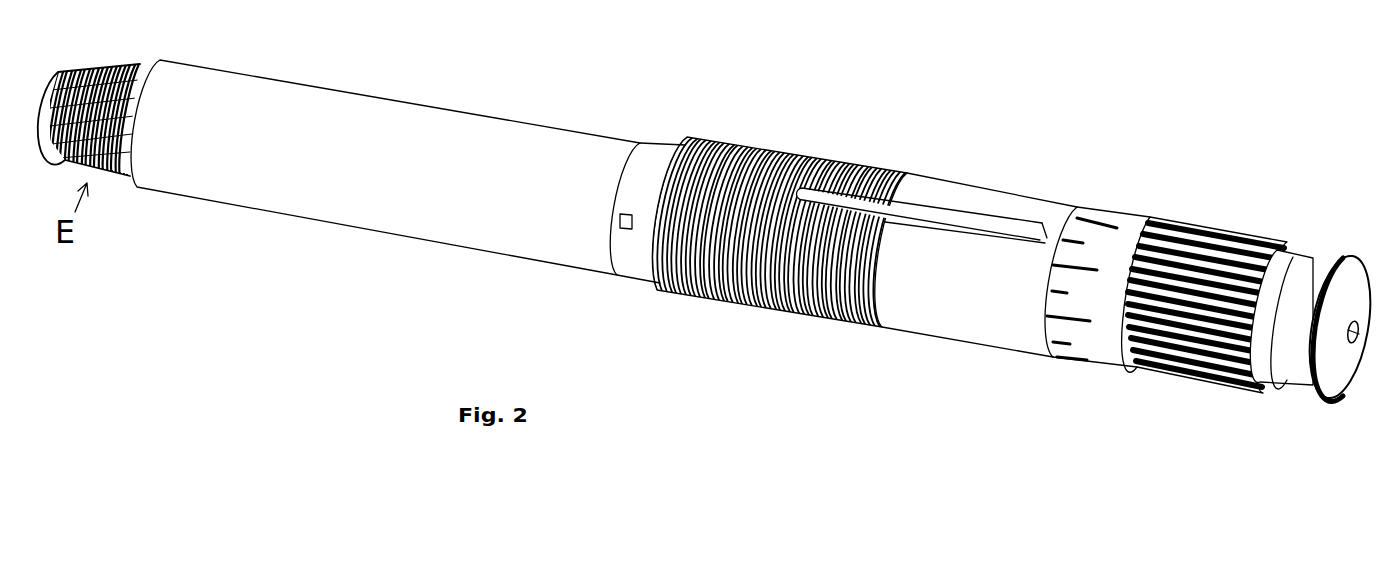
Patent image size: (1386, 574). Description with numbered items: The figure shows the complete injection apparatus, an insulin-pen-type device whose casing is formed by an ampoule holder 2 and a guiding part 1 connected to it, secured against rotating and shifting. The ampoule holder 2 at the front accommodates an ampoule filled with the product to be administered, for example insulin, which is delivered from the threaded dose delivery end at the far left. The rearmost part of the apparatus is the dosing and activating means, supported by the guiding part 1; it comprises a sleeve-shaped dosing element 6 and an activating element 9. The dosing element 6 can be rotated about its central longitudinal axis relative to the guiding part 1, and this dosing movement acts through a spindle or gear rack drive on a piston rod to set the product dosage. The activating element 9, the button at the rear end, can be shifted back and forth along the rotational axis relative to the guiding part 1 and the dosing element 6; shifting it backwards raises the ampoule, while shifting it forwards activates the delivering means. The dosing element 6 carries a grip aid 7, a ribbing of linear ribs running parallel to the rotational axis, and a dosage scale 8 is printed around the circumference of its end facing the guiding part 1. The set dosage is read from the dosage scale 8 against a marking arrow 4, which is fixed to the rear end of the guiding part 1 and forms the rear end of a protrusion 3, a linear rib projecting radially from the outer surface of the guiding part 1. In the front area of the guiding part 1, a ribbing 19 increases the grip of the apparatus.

The guiding part 1 is at (963, 320).
The ampoule holder 2 is at (433, 213).
The protrusion 3 is at (927, 210).
The marking arrow 4 is at (1040, 223).
The dosing element 6 is at (1177, 219).
The grip aid 7 is at (1237, 227).
The dosage scale 8 is at (1107, 213).
The activating element 9 is at (1323, 397).
The ribbing 19 is at (737, 303).